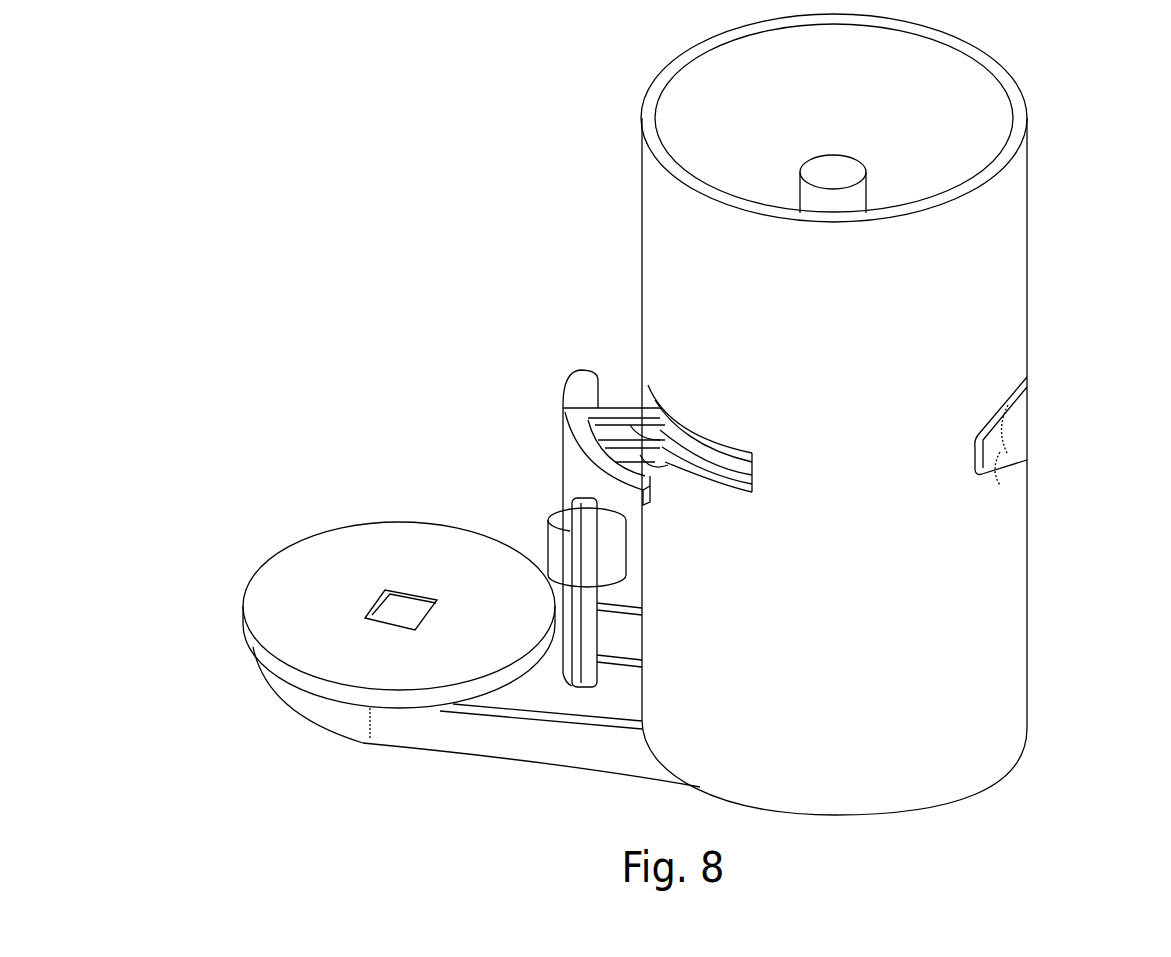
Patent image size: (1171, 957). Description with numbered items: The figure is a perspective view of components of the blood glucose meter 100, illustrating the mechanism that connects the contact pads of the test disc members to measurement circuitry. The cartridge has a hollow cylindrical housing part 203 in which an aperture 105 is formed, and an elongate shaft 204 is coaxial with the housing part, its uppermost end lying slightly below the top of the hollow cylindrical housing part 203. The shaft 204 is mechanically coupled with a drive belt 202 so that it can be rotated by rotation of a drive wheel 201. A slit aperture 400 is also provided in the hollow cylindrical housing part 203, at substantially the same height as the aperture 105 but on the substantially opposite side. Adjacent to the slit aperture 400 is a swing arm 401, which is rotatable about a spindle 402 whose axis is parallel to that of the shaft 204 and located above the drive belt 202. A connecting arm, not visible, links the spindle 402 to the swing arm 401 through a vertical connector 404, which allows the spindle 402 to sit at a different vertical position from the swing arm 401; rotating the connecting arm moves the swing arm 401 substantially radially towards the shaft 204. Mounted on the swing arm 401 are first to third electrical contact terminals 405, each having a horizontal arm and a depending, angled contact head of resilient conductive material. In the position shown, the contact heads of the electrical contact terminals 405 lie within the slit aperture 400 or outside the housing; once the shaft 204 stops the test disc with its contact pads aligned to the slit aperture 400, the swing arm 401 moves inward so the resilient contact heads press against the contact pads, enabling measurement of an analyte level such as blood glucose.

The blood glucose meter 100 is at (455, 172).
The aperture 105 is at (990, 463).
The drive wheel 201 is at (296, 587).
The drive belt 202 is at (417, 735).
The hollow cylindrical housing part 203 is at (990, 218).
The shaft 204 is at (828, 168).
The slit aperture 400 is at (697, 435).
The swing arm 401 is at (590, 450).
The spindle 402 is at (560, 553).
The vertical connector 404 is at (580, 620).
The electrical contact terminals 405 is at (585, 425).